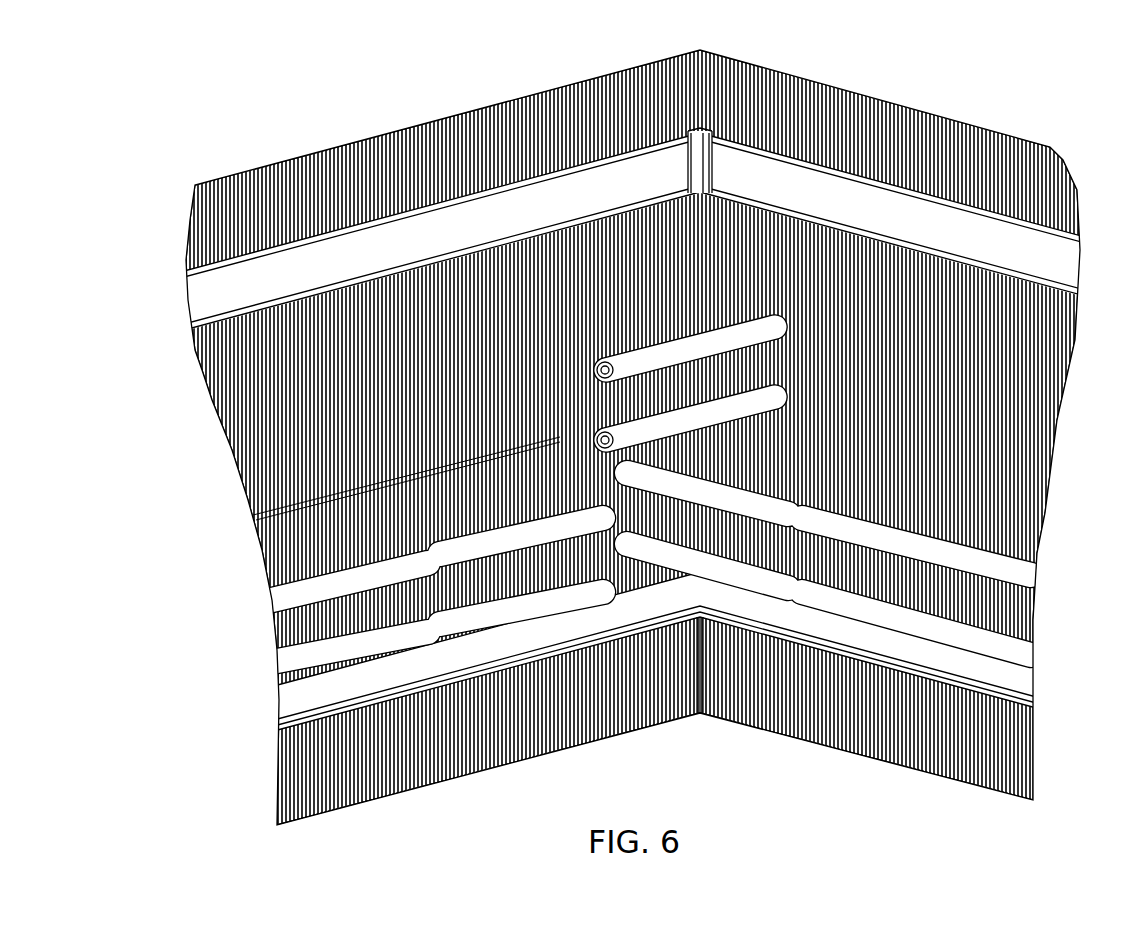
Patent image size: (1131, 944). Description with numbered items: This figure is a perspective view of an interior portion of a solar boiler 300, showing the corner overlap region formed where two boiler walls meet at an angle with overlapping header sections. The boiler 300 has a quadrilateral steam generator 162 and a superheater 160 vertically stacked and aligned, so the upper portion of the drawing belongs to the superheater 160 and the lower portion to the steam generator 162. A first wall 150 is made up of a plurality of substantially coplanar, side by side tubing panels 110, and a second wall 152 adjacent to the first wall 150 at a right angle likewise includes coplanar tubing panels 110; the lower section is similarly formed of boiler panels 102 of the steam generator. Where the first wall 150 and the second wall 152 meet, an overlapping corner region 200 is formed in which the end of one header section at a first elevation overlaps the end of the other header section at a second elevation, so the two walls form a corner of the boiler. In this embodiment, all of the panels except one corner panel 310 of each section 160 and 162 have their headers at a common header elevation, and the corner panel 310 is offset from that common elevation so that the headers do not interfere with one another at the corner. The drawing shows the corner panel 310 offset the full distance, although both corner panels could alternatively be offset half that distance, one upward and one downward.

The second boiler panel 110 is at (215, 388).
The first wall 150 is at (291, 127).
The second wall 152 is at (1015, 107).
The superheater 160 is at (220, 490).
The steam generator 162 is at (236, 687).
The first boiler panel 102 is at (280, 790).
The overlapping corner region 200 is at (716, 737).
The solar boiler 300 is at (238, 597).
The corner panel 310 is at (626, 255).